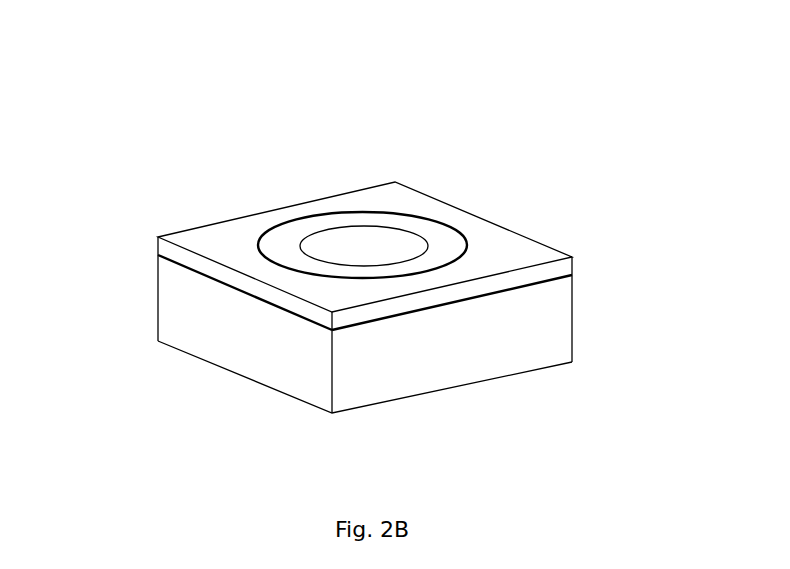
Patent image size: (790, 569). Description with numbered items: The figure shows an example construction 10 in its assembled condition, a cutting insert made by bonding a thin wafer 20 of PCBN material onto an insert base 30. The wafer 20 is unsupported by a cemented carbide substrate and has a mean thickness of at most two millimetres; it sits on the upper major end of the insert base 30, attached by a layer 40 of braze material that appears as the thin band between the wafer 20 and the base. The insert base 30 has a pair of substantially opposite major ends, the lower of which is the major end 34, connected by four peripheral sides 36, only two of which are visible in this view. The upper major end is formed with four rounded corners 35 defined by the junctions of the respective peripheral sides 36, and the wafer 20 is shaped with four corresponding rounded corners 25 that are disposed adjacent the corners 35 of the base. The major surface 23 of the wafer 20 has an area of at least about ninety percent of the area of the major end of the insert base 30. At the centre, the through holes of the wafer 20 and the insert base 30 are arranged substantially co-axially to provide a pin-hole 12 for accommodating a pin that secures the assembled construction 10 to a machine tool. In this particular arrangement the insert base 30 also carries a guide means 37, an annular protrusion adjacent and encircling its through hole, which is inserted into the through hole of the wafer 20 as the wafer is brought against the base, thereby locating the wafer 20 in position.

The construction 10 is at (203, 99).
The pin-hole 12 is at (385, 254).
The wafer 20 is at (450, 222).
The major surface 23 is at (249, 220).
The corners 25 is at (395, 182).
The insert base 30 is at (533, 358).
The major end 34 is at (247, 395).
The rounded corners 35 is at (158, 257).
The peripheral sides 36 is at (188, 319).
The guide means 37 is at (443, 253).
The layer of braze material 40 is at (388, 317).